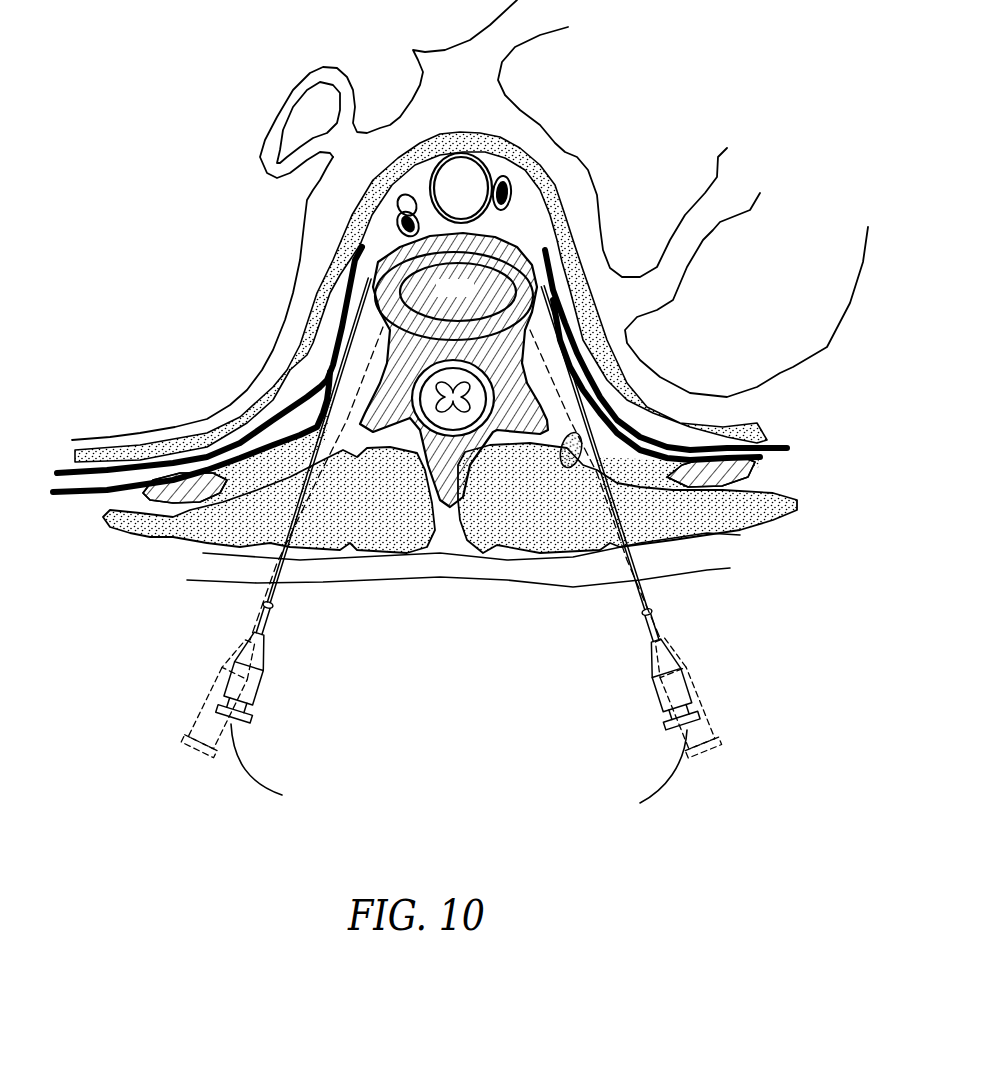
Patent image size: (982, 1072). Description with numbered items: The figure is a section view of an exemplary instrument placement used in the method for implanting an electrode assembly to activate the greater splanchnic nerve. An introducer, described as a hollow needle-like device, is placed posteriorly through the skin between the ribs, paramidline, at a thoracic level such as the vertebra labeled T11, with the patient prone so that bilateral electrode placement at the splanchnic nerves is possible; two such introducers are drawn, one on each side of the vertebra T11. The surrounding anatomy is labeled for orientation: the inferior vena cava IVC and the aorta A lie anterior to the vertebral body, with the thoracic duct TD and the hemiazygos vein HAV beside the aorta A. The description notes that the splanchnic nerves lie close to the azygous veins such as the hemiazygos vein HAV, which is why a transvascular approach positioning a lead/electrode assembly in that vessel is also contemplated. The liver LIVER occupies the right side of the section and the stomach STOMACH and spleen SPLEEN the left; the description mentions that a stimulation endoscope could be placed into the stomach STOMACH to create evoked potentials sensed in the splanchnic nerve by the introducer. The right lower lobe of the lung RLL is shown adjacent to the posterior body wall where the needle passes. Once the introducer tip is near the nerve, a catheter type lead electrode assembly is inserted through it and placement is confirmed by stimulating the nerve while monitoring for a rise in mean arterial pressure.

The inferior vena cava IVC is at (388, 89).
The aorta A is at (461, 188).
The thoracic duct TD is at (408, 208).
The hemiazygos vein HAV is at (512, 204).
The eleventh thoracic vertebra T11 is at (454, 370).
The right lower lobe of lung RLL is at (207, 369).
The liver LIVER is at (202, 298).
The stomach STOMACH is at (612, 152).
The spleen SPLEEN is at (746, 295).